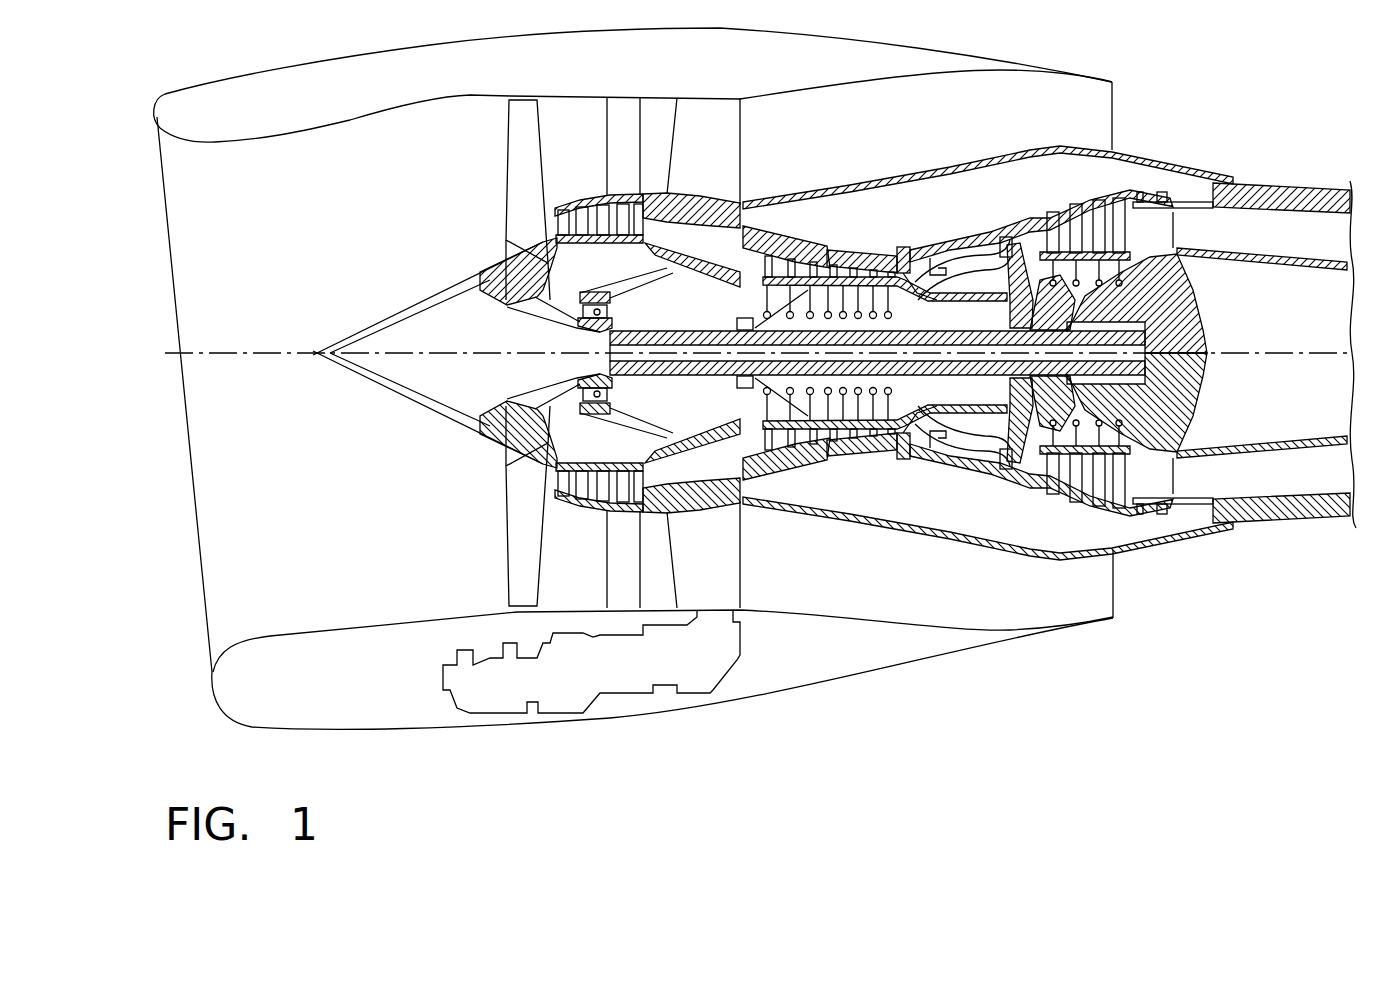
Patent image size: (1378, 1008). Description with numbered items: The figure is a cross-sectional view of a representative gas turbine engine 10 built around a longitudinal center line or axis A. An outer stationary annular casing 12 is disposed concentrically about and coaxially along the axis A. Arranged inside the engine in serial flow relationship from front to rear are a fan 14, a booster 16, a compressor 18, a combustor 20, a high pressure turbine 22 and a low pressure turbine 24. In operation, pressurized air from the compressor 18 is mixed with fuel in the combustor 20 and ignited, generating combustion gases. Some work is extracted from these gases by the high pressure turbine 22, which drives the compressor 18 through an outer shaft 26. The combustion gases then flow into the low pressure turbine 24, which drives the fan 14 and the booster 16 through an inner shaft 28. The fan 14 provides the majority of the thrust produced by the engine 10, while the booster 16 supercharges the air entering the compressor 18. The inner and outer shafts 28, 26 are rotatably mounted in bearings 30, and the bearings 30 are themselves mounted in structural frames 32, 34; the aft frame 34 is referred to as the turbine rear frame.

The gas turbine engine 10 is at (1156, 110).
The outer stationary annular casing 12 is at (796, 238).
The fan 14 is at (524, 480).
The booster 16 is at (580, 518).
The compressor 18 is at (829, 443).
The combustor 20 is at (953, 443).
The high pressure turbine 22 is at (1033, 480).
The low pressure turbine 24 is at (1098, 508).
The outer shaft 26 is at (984, 396).
The inner shaft 28 is at (984, 330).
The bearings 30 is at (587, 295).
The structural frame 32 is at (720, 140).
The turbine rear frame 34 is at (1160, 228).
The longitudinal center line or axis A is at (240, 352).